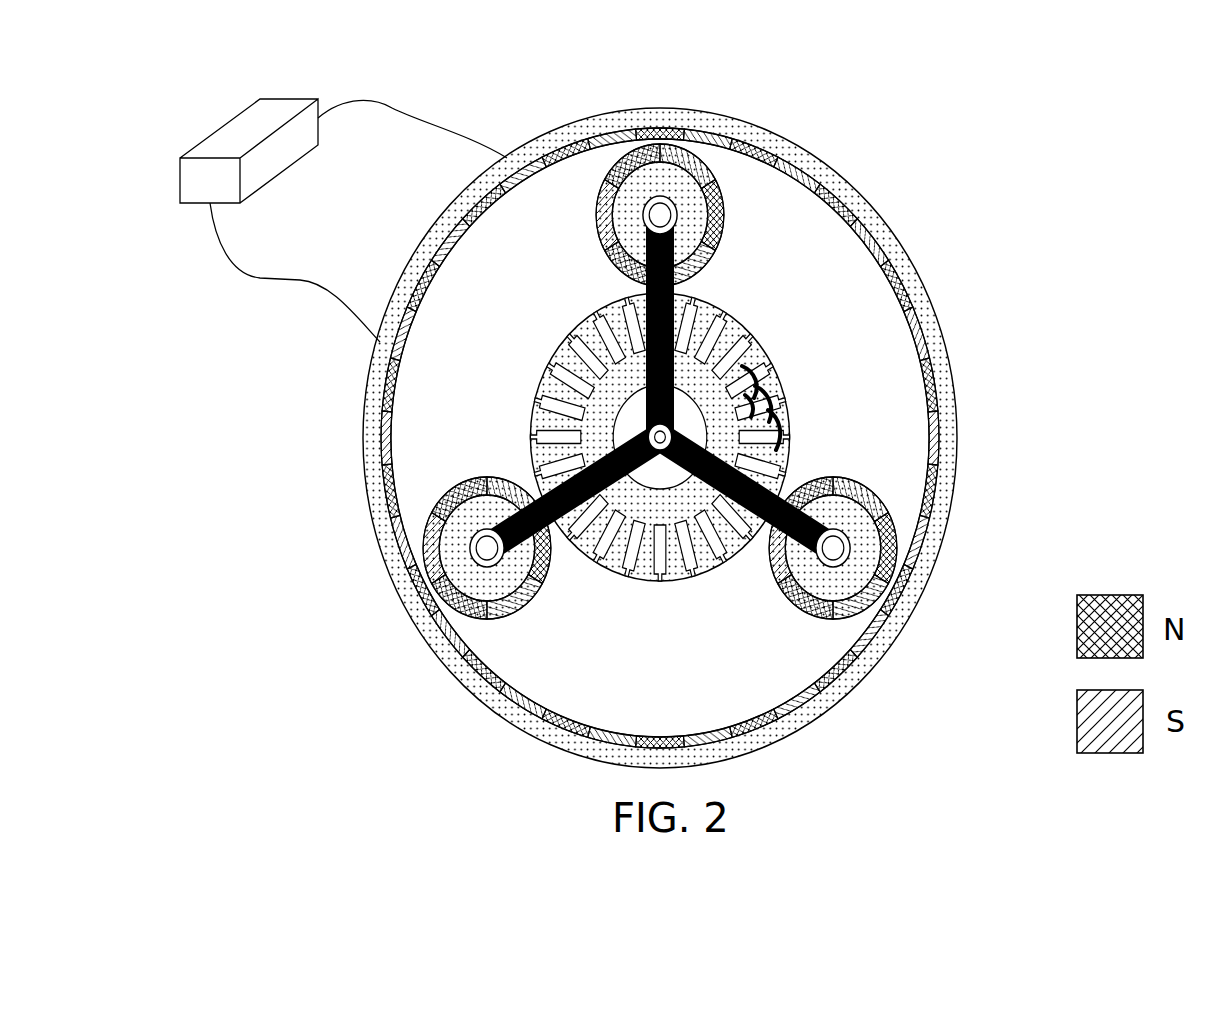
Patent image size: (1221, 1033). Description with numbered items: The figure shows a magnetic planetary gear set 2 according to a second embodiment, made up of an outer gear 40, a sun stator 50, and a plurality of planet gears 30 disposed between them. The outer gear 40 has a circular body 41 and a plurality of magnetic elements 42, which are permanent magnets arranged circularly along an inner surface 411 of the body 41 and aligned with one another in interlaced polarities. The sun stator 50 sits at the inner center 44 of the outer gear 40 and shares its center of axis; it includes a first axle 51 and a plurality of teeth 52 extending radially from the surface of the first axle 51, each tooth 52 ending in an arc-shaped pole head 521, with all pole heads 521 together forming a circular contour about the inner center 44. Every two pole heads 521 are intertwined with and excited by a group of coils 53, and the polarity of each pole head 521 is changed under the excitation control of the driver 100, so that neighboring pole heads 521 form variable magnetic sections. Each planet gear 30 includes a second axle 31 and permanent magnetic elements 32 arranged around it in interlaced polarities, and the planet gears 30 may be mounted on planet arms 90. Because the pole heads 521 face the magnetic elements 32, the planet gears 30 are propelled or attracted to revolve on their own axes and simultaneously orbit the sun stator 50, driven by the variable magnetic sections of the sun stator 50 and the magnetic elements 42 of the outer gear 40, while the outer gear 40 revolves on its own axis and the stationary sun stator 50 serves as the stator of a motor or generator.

The magnetic planetary gear set 2 is at (1075, 118).
The driver 100 is at (240, 135).
The outer gear 40 is at (680, 414).
The body 41 is at (803, 157).
The inner surface 411 is at (842, 178).
The magnetic elements 42 is at (680, 131).
The sun stator 50 is at (680, 454).
The first axle 51 is at (633, 405).
The teeth 52 is at (620, 439).
The pole head 521 is at (665, 583).
The coils 53 is at (783, 394).
The planet arms 90 is at (767, 424).
The inner center 44 is at (650, 431).
The planet gears 30 is at (542, 534).
The second axle 31 is at (494, 612).
The magnetic elements 32 is at (549, 571).